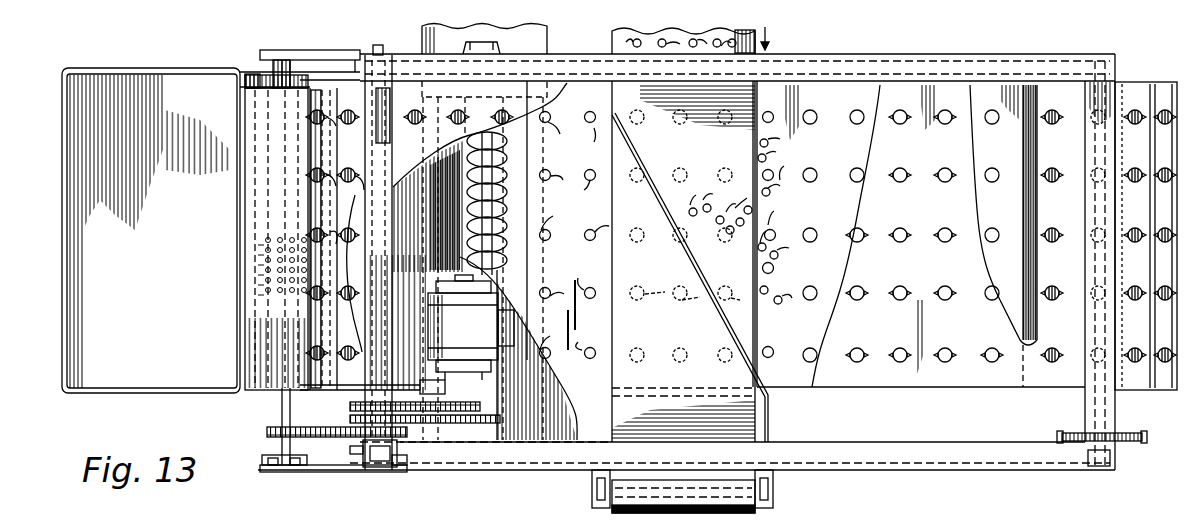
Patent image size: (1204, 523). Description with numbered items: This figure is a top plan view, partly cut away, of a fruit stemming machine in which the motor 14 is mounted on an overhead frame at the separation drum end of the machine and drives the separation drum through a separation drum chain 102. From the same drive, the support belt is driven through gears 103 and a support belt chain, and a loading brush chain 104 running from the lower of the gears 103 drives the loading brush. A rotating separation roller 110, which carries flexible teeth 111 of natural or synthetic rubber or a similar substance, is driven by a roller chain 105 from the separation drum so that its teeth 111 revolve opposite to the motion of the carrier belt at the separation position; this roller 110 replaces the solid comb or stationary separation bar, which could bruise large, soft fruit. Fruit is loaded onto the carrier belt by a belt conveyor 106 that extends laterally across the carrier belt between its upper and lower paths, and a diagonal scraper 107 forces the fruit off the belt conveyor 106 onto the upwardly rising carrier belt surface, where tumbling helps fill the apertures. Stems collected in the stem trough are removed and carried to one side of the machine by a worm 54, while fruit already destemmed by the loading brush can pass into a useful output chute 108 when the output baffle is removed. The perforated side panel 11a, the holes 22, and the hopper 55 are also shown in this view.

The output chute 108 is at (151, 230).
The rotating separation roller 110 is at (270, 182).
The flexible teeth 111 is at (262, 258).
The hopper 55 is at (527, 40).
The worm 54 is at (497, 185).
The motor 14 is at (471, 327).
The belt conveyor 106 is at (683, 261).
The diagonal scraper 107 is at (678, 250).
The perforated side panel 11a is at (929, 234).
The holes 22 is at (945, 170).
The roller chain 105 is at (267, 432).
The separation drum chain 102 is at (350, 405).
The gears 103 is at (346, 386).
The loading brush chain 104 is at (410, 447).